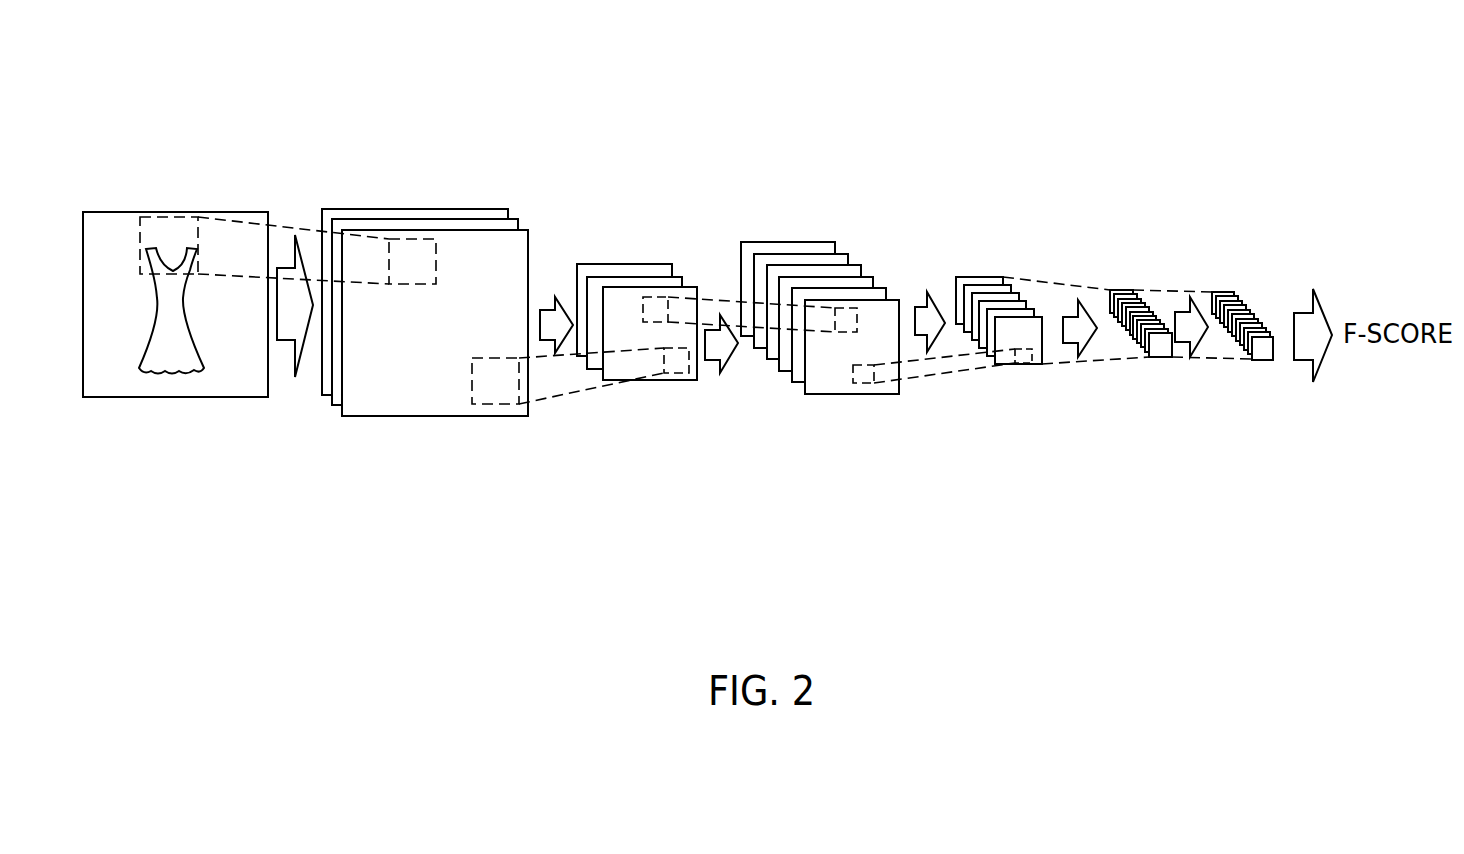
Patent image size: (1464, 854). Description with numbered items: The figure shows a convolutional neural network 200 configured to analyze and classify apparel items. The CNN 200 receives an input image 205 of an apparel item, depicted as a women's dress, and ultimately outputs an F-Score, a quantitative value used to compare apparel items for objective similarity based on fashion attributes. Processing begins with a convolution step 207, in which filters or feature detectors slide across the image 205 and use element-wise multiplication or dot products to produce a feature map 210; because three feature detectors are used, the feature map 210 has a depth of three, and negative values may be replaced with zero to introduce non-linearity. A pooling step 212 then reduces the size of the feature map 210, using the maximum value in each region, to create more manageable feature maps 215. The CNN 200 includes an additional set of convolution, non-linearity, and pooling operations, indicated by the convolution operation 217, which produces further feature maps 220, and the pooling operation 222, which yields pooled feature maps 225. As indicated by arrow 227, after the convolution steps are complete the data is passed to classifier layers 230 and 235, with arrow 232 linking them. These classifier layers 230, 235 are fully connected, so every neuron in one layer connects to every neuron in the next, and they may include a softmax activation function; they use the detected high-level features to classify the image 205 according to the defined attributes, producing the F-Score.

The convolutional neural network 200 is at (1042, 92).
The image 205 is at (130, 211).
The convolution step 207 is at (283, 342).
The feature map 210 is at (323, 191).
The pooling step 212 is at (548, 343).
The pooled feature maps 215 is at (577, 241).
The convolution operation 217 is at (710, 362).
The feature maps 220 is at (918, 226).
The pooling operation 222 is at (922, 337).
The pooled feature maps 225 is at (939, 256).
The arrow to classifier layers 227 is at (1070, 345).
The classifier layer 230 is at (1077, 251).
The arrow between classifier layers 232 is at (1187, 343).
The classifier layer 235 is at (1188, 252).